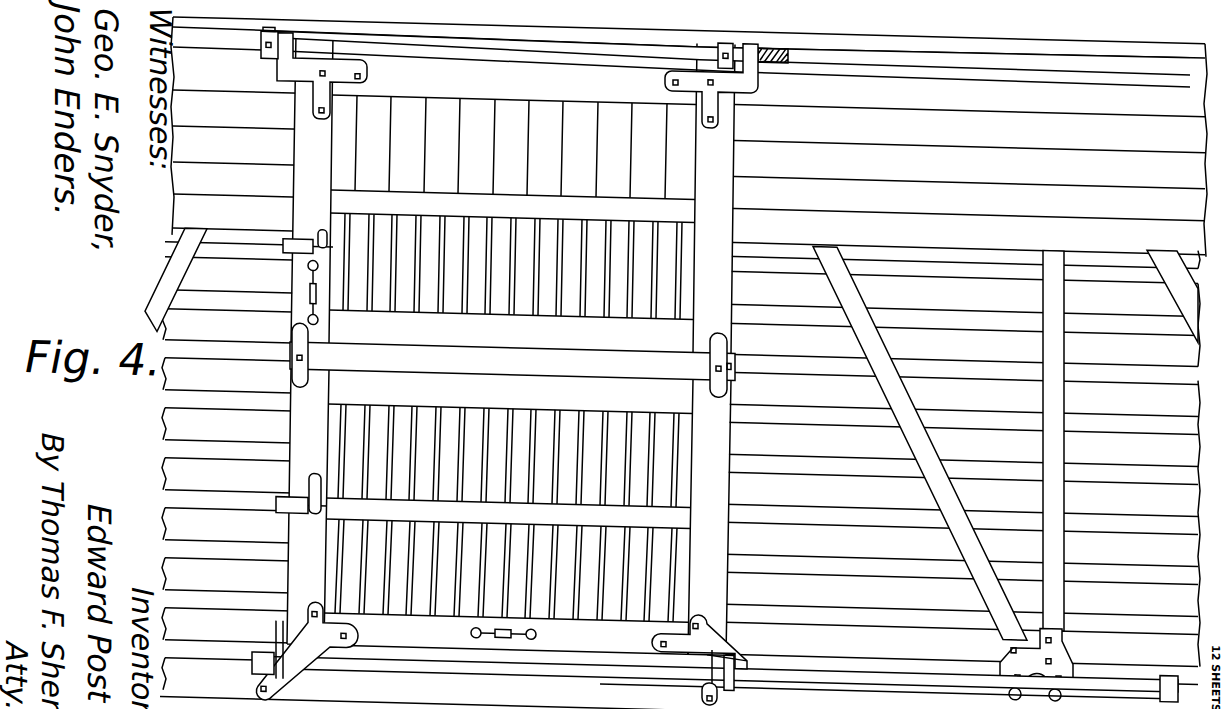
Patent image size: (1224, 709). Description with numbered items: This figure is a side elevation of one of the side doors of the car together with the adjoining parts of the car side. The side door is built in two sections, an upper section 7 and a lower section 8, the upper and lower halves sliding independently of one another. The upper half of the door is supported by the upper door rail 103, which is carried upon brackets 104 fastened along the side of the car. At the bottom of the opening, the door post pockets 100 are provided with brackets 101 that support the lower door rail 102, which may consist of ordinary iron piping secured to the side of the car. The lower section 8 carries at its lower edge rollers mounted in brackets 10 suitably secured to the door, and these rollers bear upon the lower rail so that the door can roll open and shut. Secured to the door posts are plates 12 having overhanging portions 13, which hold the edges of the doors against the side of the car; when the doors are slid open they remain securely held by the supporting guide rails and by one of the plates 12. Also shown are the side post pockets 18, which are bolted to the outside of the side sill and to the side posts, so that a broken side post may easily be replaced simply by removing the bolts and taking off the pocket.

The upper door section 7 is at (513, 194).
The lower door section 8 is at (509, 512).
The brackets 10 is at (280, 65).
The plates 12 is at (290, 330).
The overhanging portions 13 is at (308, 346).
The side post pockets 18 is at (1048, 632).
The door post pockets 100 is at (742, 643).
The brackets 101 is at (700, 679).
The lower door rail 102 is at (520, 661).
The upper door rail 103 is at (472, 42).
The brackets 104 is at (260, 31).